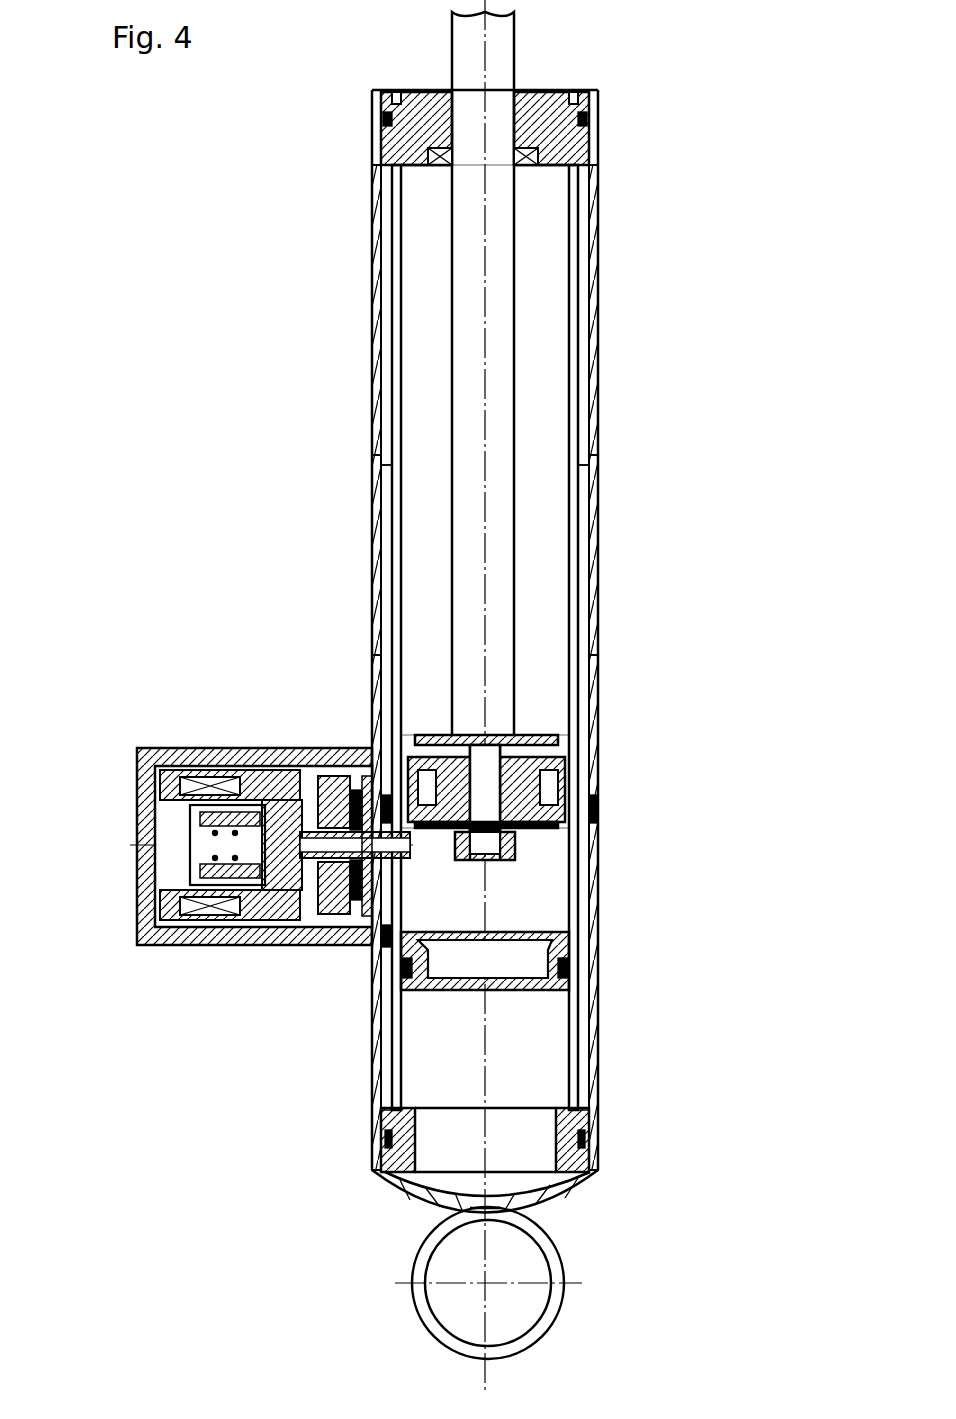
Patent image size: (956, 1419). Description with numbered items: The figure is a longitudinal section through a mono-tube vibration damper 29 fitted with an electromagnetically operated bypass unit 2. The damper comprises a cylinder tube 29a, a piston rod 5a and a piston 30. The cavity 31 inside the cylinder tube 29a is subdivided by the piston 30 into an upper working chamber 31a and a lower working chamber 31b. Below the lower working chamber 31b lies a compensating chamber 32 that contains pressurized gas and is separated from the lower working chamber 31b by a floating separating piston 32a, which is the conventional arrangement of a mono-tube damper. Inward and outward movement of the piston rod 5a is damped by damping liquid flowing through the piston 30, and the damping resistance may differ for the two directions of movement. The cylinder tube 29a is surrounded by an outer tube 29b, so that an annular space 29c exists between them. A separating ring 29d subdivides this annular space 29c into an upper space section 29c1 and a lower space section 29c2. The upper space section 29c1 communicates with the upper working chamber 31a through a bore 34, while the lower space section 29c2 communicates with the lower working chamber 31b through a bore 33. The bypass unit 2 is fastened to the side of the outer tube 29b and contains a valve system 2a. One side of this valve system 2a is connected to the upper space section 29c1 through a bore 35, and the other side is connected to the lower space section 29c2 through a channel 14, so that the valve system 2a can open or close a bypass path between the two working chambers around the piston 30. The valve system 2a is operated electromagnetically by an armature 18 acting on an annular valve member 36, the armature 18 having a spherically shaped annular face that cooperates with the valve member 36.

The bypass unit 2 is at (152, 957).
The valve system 2a is at (265, 900).
The piston rod 5a is at (502, 205).
The channel 14 is at (401, 852).
The armature 18 is at (175, 762).
The mono-tube vibration damper 29 is at (618, 306).
The cylinder tube 29a is at (578, 253).
The outer tube 29b is at (595, 612).
The annular space 29c is at (585, 420).
The upper space section 29c1 is at (583, 543).
The lower space section 29c2 is at (583, 1088).
The separating ring 29d is at (592, 805).
The piston 30 is at (560, 755).
The cavity 31 is at (545, 390).
The upper working chamber 31a is at (548, 480).
The lower working chamber 31b is at (553, 857).
The compensating chamber 32 is at (550, 1030).
The floating separating piston 32a is at (560, 965).
The bore 33 is at (376, 935).
The bore 34 is at (402, 170).
The bore 35 is at (352, 760).
The valve member 36 is at (265, 760).